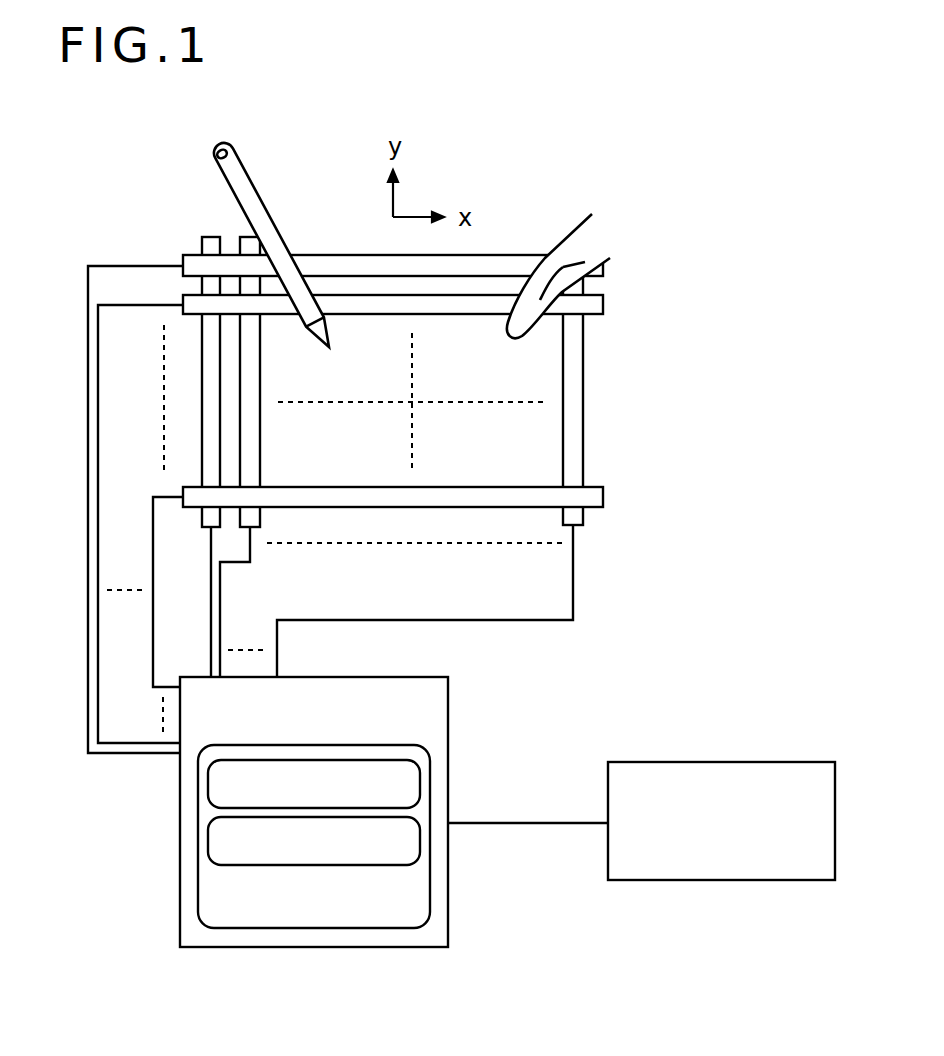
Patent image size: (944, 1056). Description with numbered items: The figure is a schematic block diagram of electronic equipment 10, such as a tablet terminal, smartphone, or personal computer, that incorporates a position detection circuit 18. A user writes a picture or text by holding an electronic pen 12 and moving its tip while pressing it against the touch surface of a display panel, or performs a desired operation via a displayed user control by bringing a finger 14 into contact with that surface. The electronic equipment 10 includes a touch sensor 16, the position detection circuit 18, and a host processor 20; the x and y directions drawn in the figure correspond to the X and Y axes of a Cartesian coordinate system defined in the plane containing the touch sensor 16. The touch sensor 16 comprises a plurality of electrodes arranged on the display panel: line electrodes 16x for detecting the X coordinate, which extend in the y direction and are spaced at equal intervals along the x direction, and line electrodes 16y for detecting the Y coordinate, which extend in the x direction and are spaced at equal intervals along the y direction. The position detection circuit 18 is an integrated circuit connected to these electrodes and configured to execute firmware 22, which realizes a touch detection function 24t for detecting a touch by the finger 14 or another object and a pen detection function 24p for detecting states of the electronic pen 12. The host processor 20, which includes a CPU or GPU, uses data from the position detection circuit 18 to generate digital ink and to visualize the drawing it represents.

The electronic equipment 10 is at (165, 203).
The electronic pen 12 is at (238, 170).
The finger 14 is at (582, 226).
The touch sensor 16 is at (693, 277).
The line electrodes 16x is at (577, 343).
The line electrodes 16y is at (604, 304).
The position detection circuit 18 is at (313, 947).
The host processor 20 is at (720, 760).
The firmware 22 is at (198, 886).
The touch detection function 24t is at (208, 780).
The pen detection function 24p is at (208, 838).